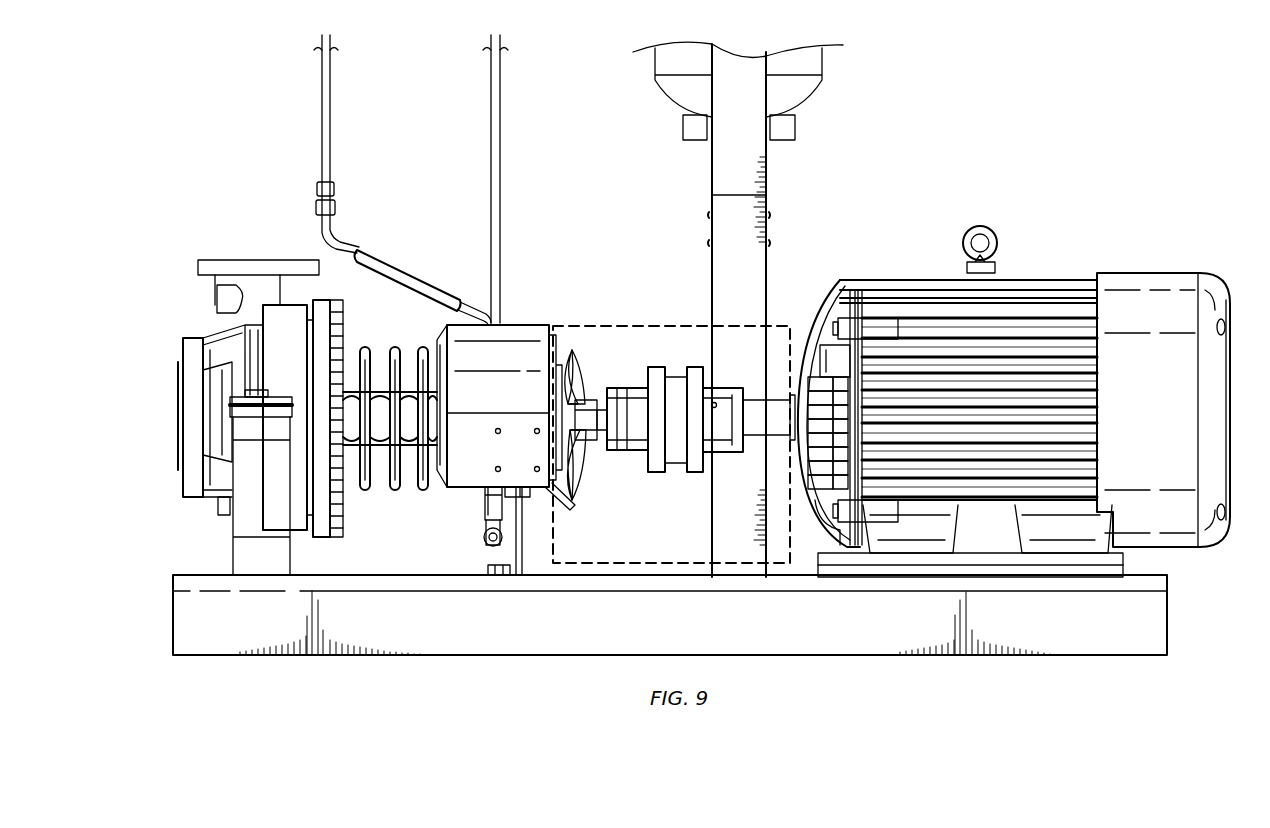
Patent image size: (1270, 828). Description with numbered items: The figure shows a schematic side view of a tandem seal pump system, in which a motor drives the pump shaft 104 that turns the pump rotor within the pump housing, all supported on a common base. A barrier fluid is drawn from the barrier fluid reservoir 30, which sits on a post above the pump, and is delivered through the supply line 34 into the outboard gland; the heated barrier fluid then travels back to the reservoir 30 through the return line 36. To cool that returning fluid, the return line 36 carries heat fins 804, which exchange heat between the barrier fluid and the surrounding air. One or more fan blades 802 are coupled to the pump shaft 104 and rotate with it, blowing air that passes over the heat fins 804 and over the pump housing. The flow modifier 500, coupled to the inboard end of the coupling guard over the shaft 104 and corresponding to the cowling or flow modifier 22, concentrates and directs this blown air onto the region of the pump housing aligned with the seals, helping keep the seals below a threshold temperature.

The flow modifier 22 is at (645, 565).
The barrier fluid reservoir 30 is at (668, 110).
The supply line 34 is at (500, 198).
The return line 36 is at (318, 222).
The pump shaft 104 is at (772, 399).
The flow modifier 500 is at (525, 323).
The fan blades 802 is at (600, 375).
The heat fins 804 is at (404, 262).